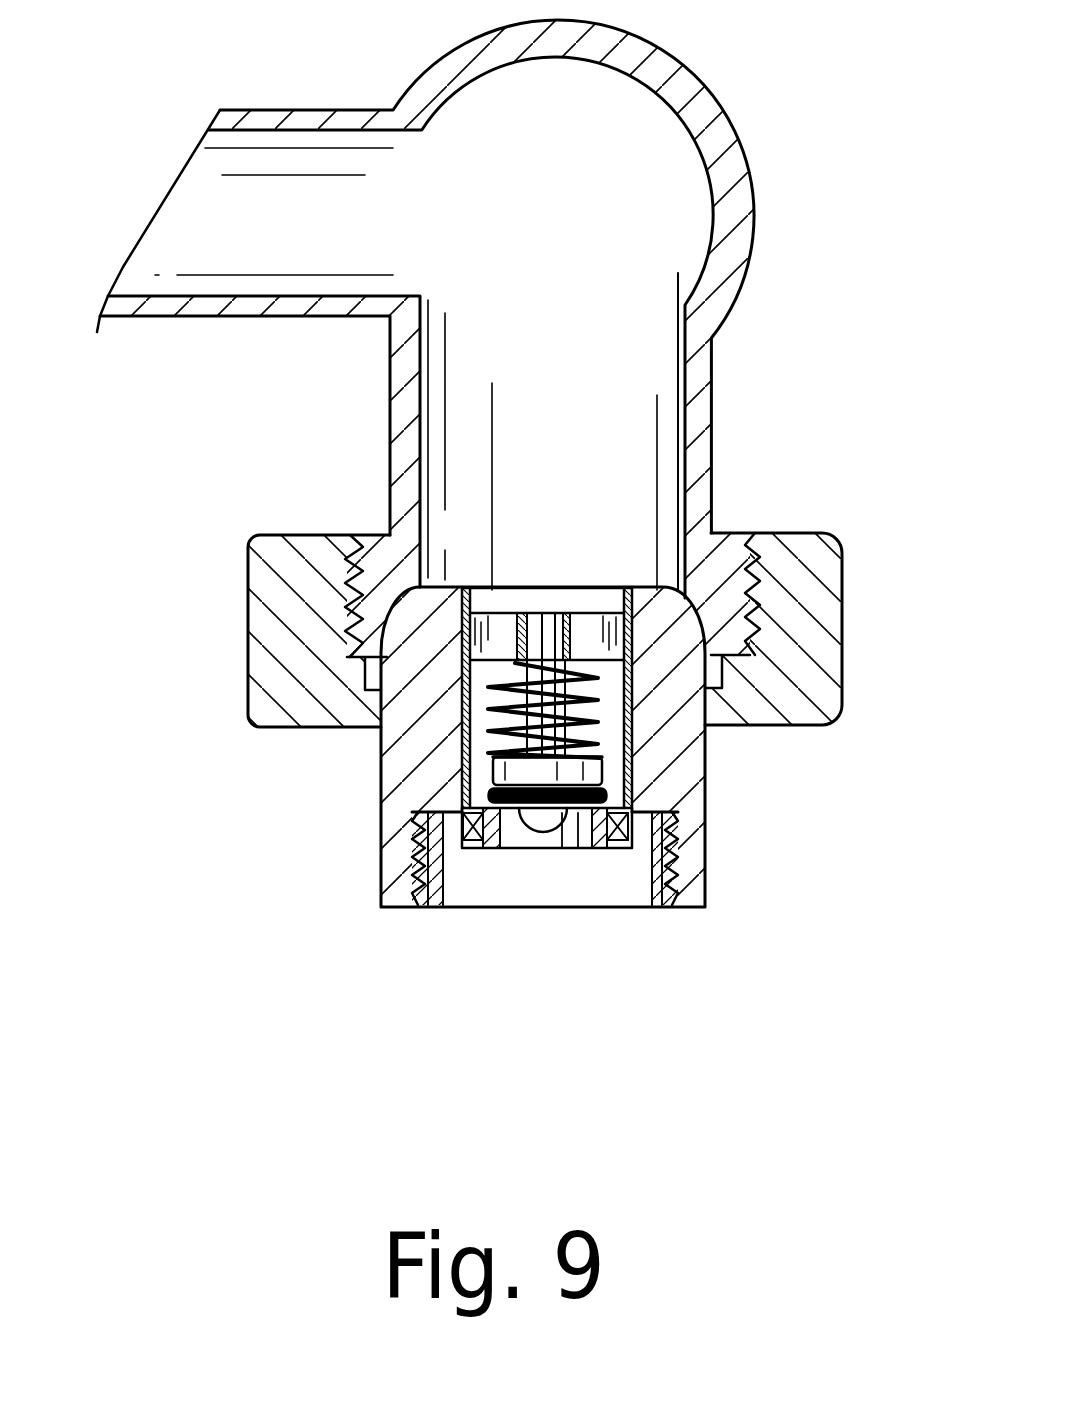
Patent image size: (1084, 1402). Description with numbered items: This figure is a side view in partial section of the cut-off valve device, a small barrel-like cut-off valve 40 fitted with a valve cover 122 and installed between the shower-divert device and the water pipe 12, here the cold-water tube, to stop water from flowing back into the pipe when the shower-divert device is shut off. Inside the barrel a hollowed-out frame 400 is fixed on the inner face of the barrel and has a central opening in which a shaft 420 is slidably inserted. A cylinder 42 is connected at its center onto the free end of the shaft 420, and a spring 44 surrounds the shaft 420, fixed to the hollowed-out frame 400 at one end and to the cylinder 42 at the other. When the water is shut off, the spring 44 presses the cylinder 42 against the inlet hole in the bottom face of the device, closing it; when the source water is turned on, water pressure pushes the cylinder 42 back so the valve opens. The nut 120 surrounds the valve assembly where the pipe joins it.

The water pipe 12 is at (277, 123).
The cut-off valve 40 is at (453, 728).
The cylinder 42 is at (571, 810).
The spring 44 is at (500, 677).
The union nut 120 is at (842, 630).
The valve cover 122 is at (705, 815).
The hollowed-out frame 400 is at (593, 637).
The shaft 420 is at (543, 630).